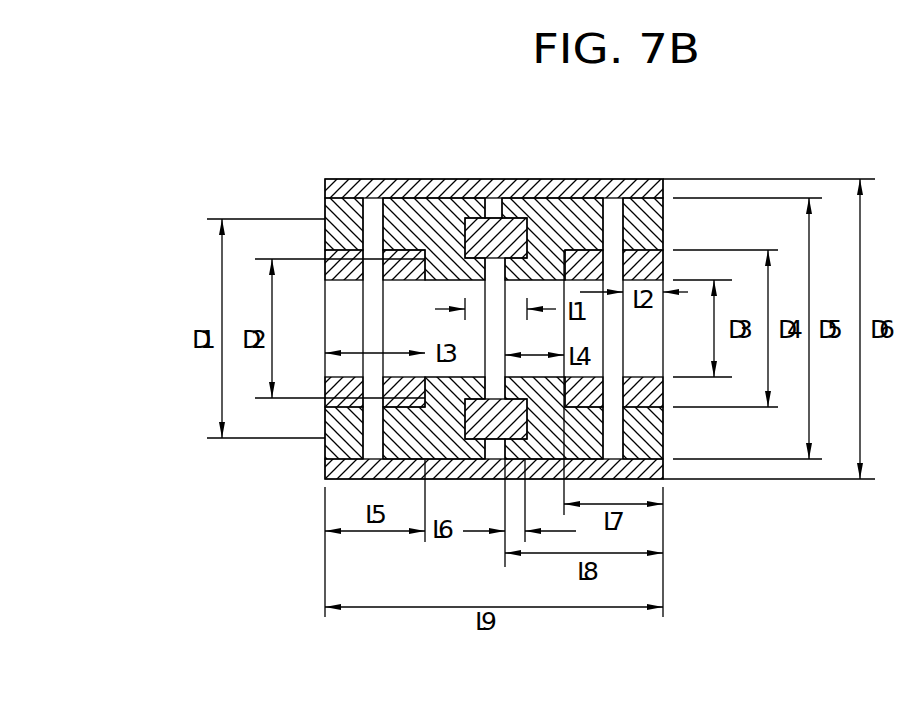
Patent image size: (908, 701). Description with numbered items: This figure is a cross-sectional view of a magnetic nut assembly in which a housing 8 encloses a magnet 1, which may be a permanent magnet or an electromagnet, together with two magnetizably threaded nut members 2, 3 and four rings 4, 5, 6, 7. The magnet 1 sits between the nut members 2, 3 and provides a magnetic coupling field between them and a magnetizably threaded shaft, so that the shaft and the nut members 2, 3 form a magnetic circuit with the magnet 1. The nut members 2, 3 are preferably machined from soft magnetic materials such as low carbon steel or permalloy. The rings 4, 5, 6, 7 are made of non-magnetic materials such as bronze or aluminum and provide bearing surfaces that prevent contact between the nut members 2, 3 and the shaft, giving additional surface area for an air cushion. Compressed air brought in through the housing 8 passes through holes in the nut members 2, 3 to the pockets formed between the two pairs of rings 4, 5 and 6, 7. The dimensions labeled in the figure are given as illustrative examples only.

The magnet 1 is at (498, 232).
The magnetizably threaded nut member 2 is at (568, 220).
The magnetizably threaded nut member 3 is at (472, 212).
The ring 4 is at (408, 250).
The ring 5 is at (345, 250).
The ring 6 is at (580, 258).
The ring 7 is at (643, 258).
The housing 8 is at (380, 188).